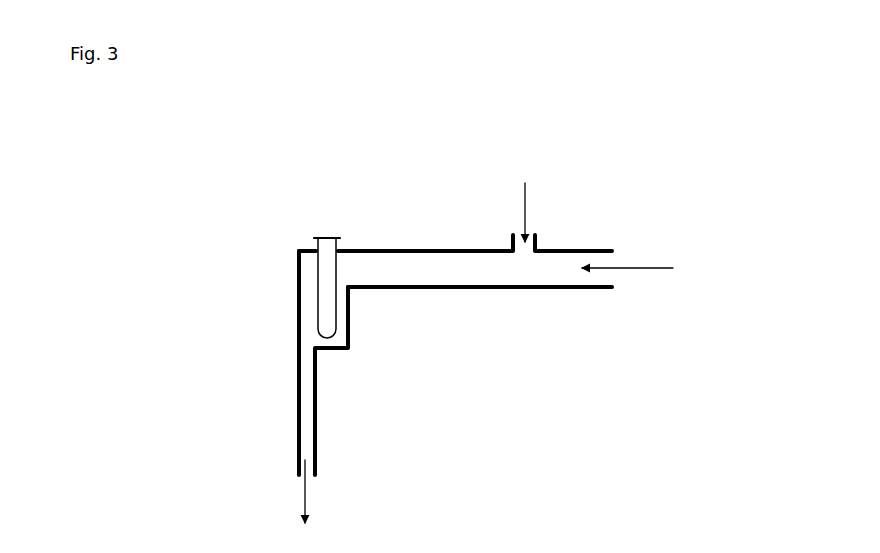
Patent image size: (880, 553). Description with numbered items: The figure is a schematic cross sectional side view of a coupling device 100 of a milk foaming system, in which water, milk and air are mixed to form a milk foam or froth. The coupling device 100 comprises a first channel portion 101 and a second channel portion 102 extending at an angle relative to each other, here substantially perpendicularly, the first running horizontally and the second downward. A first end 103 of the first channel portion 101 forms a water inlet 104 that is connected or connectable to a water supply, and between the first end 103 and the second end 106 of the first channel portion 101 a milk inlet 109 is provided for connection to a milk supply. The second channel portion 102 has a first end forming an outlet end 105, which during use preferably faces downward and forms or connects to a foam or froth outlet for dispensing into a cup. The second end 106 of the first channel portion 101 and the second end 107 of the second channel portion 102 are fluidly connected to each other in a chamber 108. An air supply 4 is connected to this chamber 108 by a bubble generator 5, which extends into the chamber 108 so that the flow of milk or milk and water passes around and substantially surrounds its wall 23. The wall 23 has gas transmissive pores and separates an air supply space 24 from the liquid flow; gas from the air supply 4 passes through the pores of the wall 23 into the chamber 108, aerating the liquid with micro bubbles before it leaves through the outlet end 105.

The coupling device 100 is at (497, 160).
The first channel portion 101 is at (456, 247).
The second channel portion 102 is at (298, 388).
The first end 103 is at (612, 257).
The water inlet 104 is at (600, 290).
The outlet end 105 is at (298, 458).
The second end 106 is at (349, 261).
The second end 107 is at (310, 315).
The chamber 108 is at (330, 352).
The milk inlet 109 is at (540, 241).
The air supply 4 is at (328, 234).
The bubble generator 5 is at (337, 340).
The wall 23 is at (336, 310).
The air supply space 24 is at (323, 263).